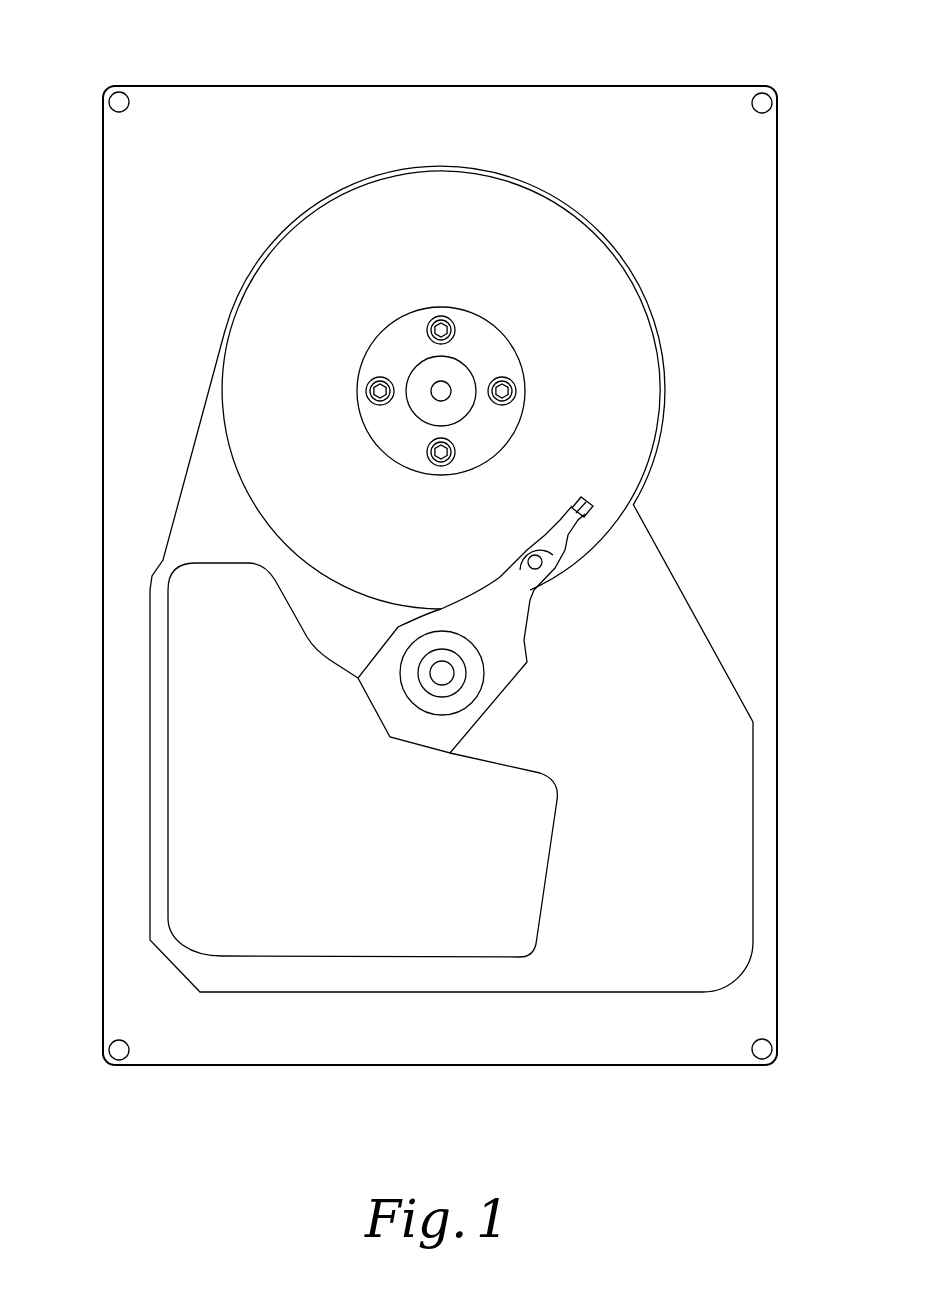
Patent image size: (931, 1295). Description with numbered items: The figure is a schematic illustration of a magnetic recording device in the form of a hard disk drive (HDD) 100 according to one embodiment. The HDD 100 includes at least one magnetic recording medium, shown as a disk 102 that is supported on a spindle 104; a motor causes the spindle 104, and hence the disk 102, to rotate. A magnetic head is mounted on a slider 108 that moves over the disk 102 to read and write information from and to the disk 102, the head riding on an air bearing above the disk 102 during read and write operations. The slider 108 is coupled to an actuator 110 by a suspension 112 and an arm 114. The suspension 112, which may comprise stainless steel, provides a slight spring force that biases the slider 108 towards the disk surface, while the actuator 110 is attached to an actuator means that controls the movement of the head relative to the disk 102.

The hard disk drive 100 is at (676, 34).
The disk 102 is at (344, 241).
The spindle 104 is at (426, 373).
The slider 108 is at (580, 496).
The actuator 110 is at (517, 867).
The suspension 112 is at (553, 542).
The arm 114 is at (502, 620).